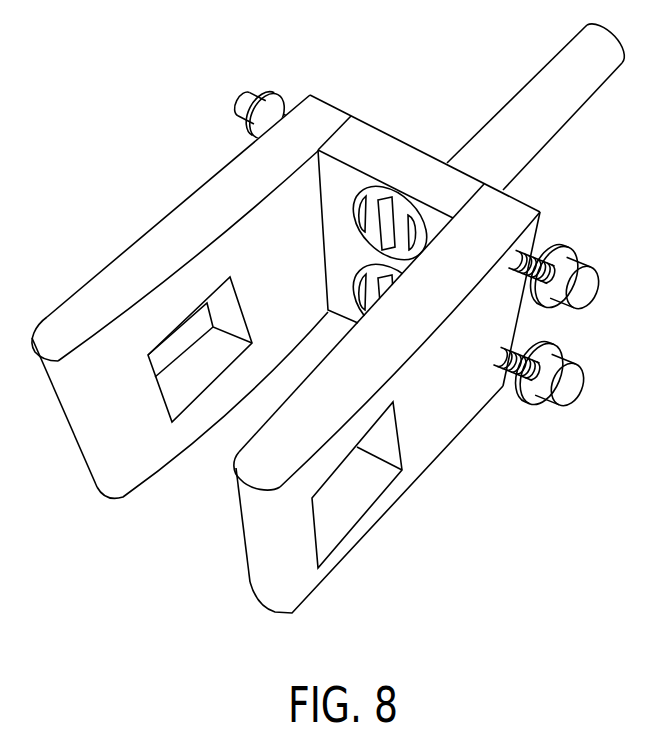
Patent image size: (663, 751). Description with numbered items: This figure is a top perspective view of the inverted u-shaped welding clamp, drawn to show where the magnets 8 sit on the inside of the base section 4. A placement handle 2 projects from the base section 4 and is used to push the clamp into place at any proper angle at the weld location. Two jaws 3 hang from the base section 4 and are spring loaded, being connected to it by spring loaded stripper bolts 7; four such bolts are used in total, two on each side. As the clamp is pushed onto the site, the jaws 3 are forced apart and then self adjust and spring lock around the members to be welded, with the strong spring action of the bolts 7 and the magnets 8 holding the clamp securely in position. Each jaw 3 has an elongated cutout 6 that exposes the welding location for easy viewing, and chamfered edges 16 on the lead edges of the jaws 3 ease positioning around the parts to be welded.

The placement handle 2 is at (563, 108).
The jaws 3 is at (68, 310).
The base section 4 is at (363, 142).
The elongated cutouts 6 is at (232, 322).
The spring loaded stripper bolts 7 is at (254, 95).
The magnets 8 is at (397, 213).
The chamfered edges 16 is at (80, 393).